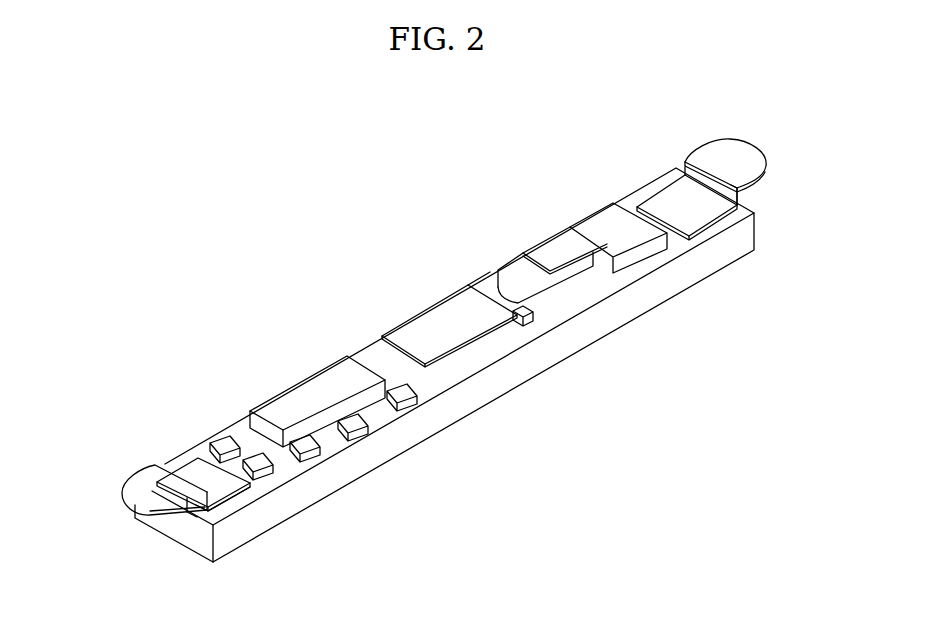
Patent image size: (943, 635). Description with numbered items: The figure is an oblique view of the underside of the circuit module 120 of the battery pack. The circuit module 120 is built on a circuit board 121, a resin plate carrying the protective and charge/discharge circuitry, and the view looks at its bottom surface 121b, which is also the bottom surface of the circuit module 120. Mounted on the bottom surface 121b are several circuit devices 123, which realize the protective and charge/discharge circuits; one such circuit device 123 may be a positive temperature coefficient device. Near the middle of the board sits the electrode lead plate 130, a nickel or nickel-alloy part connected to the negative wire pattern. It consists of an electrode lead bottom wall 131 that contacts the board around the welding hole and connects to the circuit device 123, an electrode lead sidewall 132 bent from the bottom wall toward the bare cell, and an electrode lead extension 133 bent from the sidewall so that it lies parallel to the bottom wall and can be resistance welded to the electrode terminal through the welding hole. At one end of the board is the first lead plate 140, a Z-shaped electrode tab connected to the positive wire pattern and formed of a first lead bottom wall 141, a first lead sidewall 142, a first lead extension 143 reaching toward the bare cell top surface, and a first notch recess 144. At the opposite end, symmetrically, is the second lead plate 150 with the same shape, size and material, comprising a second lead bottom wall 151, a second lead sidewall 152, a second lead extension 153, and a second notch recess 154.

The circuit module 120 is at (122, 325).
The circuit board 121 is at (733, 249).
The bottom surface 121b is at (487, 281).
The circuit device 123 is at (223, 445).
The electrode lead plate 130 is at (495, 341).
The electrode lead bottom wall 131 is at (523, 313).
The electrode lead sidewall 132 is at (513, 327).
The electrode lead extension 133 is at (450, 337).
The first lead plate 140 is at (696, 158).
The first lead bottom wall 141 is at (660, 198).
The first lead sidewall 142 is at (685, 170).
The first lead extension 143 is at (713, 148).
The first notch recess 144 is at (740, 190).
The second lead plate 150 is at (159, 510).
The second lead bottom wall 151 is at (188, 472).
The second lead sidewall 152 is at (192, 517).
The second lead extension 153 is at (137, 505).
The second notch recess 154 is at (237, 507).